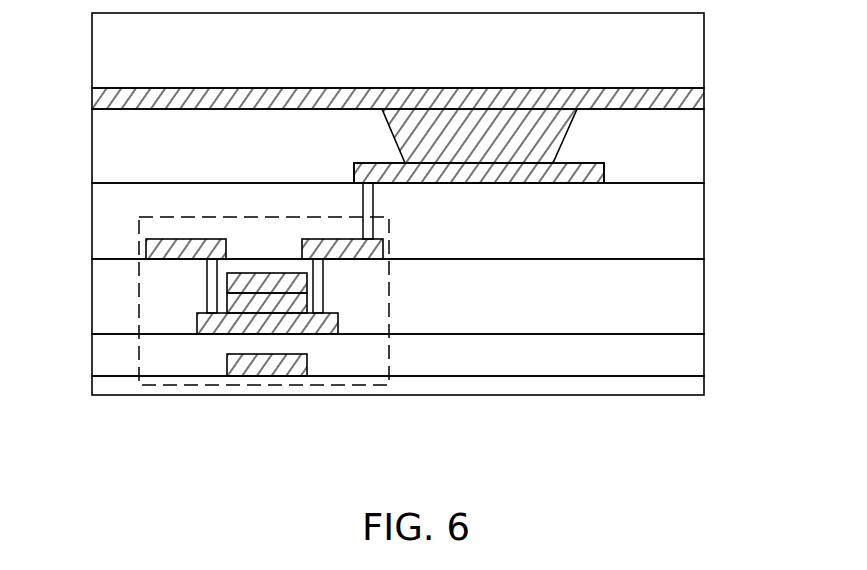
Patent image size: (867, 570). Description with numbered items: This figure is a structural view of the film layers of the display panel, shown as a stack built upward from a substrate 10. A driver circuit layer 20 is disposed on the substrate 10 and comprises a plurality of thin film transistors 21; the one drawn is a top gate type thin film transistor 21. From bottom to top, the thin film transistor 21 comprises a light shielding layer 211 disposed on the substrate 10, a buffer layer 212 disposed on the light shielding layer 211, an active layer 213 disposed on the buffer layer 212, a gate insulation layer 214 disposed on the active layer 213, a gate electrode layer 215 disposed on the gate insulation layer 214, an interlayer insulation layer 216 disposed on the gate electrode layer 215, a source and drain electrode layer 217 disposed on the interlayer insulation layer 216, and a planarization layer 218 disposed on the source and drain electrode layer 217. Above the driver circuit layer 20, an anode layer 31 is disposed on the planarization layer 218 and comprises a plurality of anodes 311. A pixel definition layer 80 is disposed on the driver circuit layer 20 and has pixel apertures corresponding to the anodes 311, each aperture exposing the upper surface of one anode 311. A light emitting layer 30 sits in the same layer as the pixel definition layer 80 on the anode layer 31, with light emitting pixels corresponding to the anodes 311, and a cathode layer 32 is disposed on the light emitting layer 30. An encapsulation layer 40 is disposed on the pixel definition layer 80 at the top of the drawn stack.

The substrate 10 is at (681, 392).
The driver circuit layer 20 is at (80, 199).
The thin film transistor 21 is at (173, 389).
The light shielding layer 211 is at (238, 367).
The buffer layer 212 is at (681, 359).
The active layer 213 is at (205, 323).
The gate insulation layer 214 is at (266, 310).
The gate electrode layer 215 is at (298, 285).
The interlayer insulation layer 216 is at (681, 302).
The source and drain electrode layer 217 is at (352, 252).
The planarization layer 218 is at (681, 224).
The light emitting layer 30 is at (551, 144).
The anode layer 31 is at (596, 178).
The anode 311 is at (479, 173).
The cathode layer 32 is at (700, 92).
The encapsulation layer 40 is at (690, 53).
The pixel definition layer 80 is at (684, 126).